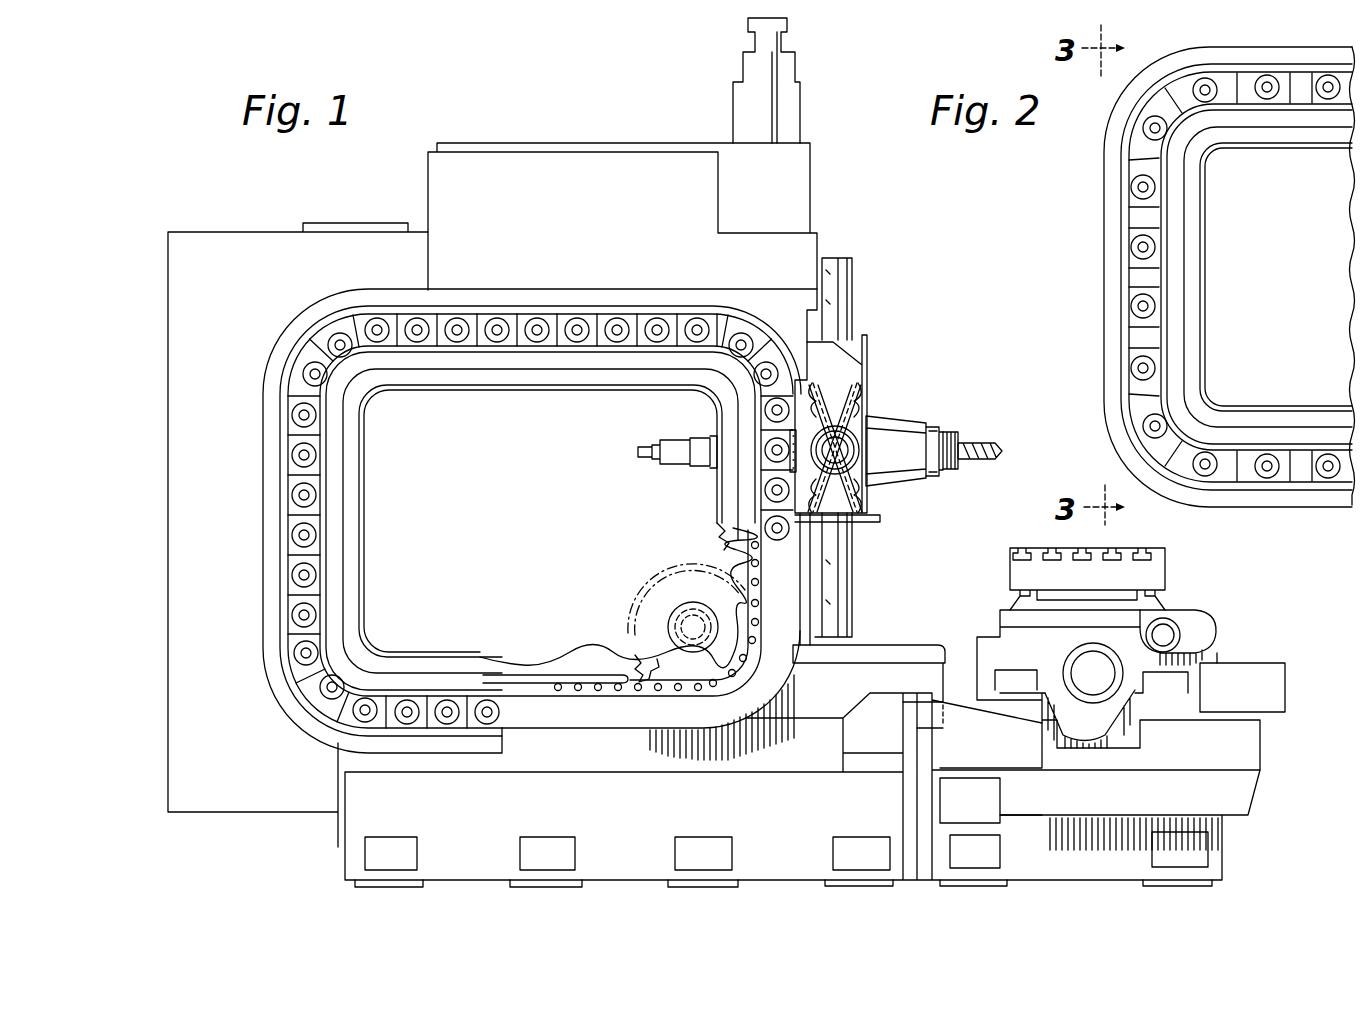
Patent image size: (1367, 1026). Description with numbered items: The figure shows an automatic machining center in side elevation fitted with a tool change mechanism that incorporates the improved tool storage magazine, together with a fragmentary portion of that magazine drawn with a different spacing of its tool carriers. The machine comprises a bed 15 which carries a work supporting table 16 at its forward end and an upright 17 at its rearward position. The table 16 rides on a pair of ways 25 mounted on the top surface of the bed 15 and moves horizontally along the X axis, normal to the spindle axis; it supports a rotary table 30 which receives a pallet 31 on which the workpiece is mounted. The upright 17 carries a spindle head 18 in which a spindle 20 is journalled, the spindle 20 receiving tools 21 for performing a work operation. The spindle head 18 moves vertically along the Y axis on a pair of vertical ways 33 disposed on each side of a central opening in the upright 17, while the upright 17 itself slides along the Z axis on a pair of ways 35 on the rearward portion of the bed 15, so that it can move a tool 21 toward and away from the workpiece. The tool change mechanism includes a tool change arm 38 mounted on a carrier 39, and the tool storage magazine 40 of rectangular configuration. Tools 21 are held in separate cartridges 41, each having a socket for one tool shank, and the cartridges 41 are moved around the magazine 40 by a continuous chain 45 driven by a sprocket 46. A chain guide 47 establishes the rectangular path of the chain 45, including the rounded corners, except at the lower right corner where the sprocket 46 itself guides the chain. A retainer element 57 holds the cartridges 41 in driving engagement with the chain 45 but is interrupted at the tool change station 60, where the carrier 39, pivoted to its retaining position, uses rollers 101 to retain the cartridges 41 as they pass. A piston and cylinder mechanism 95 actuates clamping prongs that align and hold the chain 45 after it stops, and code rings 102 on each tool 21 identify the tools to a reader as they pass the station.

In FIG. 1, the bed 15 is at (1235, 782).
In FIG. 1, the work supporting table 16 is at (1205, 635).
In FIG. 1, the upright 17 is at (440, 176).
In FIG. 1, the spindle head 18 is at (908, 424).
In FIG. 1, the spindle 20 is at (940, 432).
In FIG. 1, the tool 21 is at (963, 463).
In FIG. 1, the ways 25 is at (1007, 684).
In FIG. 1, the rotary table 30 is at (1007, 616).
In FIG. 1, the pallet 31 is at (1160, 572).
In FIG. 1, the vertical ways 33 is at (848, 269).
In FIG. 1, the ways 35 is at (865, 648).
In FIG. 1, the tool change arm 38 is at (869, 520).
In FIG. 1, the carrier 39 is at (845, 367).
In FIG. 1, the tool storage magazine 40 is at (277, 335).
In FIG. 1, the tool carriers or cartridges 41 is at (459, 311).
In FIG. 2, the tool carriers or cartridges 41 is at (1267, 76).
In FIG. 1, the continuous chain 45 is at (613, 696).
In FIG. 1, the sprocket 46 is at (677, 667).
In FIG. 1, the chain guide 47 is at (735, 541).
In FIG. 1, the retainer element 57 is at (522, 688).
In FIG. 1, the tool change station 60 is at (756, 487).
In FIG. 1, the piston and cylinder mechanism 95 is at (690, 438).
In FIG. 1, the rollers 101 is at (790, 445).
In FIG. 1, the code rings 102 is at (958, 435).